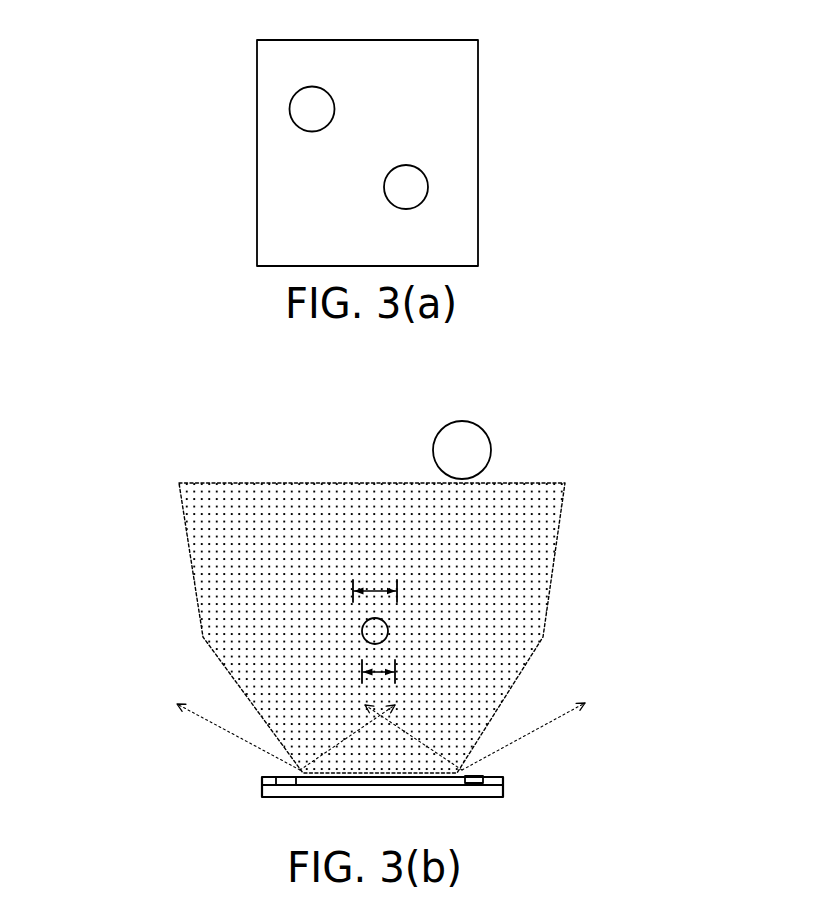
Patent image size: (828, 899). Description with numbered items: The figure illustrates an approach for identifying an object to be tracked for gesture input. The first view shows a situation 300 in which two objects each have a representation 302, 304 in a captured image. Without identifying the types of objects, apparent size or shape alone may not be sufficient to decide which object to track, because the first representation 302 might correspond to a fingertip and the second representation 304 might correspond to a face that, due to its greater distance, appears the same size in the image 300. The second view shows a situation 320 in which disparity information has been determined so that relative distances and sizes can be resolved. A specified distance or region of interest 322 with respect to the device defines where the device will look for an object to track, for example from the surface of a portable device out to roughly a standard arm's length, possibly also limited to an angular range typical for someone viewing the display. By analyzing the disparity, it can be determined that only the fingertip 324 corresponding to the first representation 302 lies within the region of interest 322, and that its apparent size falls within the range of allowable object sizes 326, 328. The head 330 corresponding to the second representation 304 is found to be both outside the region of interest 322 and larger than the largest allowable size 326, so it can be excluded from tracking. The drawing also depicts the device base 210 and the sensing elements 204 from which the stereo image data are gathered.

The situation 300 is at (551, 61).
The first representation 302 is at (334, 105).
The second representation 304 is at (428, 187).
The situation 320 is at (638, 470).
The region of interest 322 is at (188, 537).
The fingertip 324 is at (387, 625).
The largest allowable size 326 is at (415, 575).
The allowable object size 328 is at (404, 670).
The head 330 is at (433, 450).
The sensor base / substrate 210 is at (503, 785).
The optical sensor elements 204 is at (277, 786).